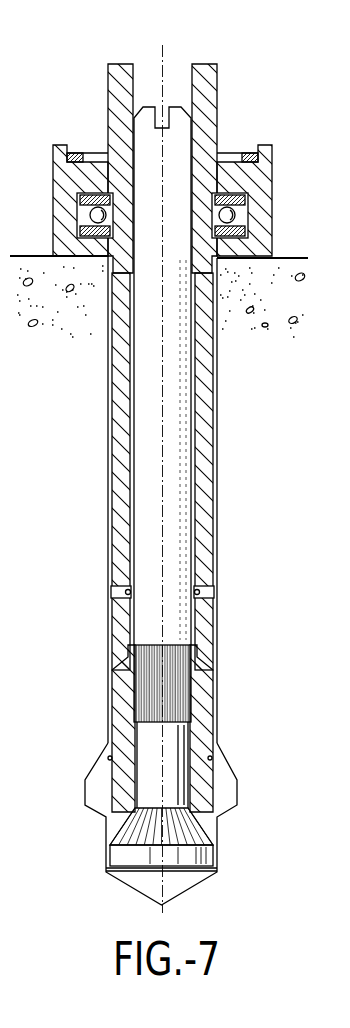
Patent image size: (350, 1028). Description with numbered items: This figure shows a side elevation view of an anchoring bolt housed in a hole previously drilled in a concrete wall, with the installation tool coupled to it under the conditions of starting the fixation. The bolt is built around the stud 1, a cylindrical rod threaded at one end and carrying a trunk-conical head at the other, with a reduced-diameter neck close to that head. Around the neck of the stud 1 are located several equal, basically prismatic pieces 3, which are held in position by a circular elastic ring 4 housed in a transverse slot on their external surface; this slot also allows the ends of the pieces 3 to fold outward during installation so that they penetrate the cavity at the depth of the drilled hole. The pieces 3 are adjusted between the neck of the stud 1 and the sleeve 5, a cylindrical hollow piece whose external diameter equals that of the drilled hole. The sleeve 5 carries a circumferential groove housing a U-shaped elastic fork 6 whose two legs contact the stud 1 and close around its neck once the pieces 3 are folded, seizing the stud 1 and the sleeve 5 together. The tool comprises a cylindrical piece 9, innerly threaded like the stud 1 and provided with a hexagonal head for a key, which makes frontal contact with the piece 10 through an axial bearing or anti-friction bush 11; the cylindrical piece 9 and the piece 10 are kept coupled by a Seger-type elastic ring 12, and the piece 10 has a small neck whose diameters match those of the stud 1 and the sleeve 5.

The stud 1 is at (157, 108).
The pieces 3 is at (200, 703).
The circular elastic ring 4 is at (207, 761).
The sleeve 5 is at (205, 418).
The elastic fork 6 is at (212, 590).
The cylindrical piece 9 is at (205, 98).
The piece 10 is at (263, 223).
The axial bearing or anti-friction bush 11 is at (80, 240).
The elastic ring 12 is at (81, 147).